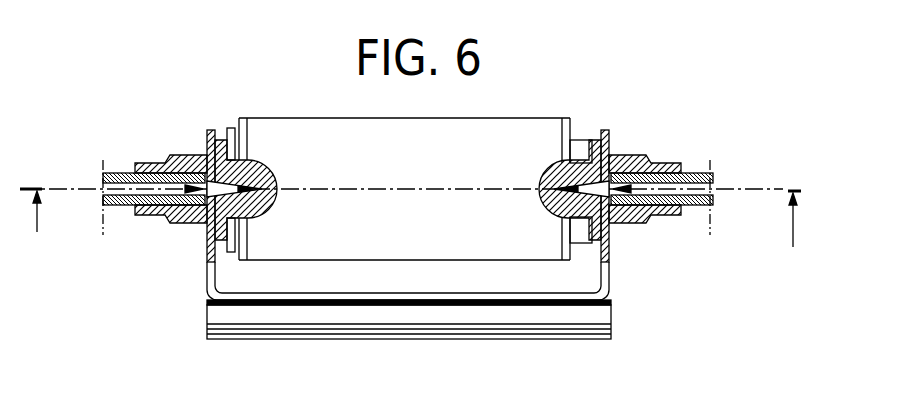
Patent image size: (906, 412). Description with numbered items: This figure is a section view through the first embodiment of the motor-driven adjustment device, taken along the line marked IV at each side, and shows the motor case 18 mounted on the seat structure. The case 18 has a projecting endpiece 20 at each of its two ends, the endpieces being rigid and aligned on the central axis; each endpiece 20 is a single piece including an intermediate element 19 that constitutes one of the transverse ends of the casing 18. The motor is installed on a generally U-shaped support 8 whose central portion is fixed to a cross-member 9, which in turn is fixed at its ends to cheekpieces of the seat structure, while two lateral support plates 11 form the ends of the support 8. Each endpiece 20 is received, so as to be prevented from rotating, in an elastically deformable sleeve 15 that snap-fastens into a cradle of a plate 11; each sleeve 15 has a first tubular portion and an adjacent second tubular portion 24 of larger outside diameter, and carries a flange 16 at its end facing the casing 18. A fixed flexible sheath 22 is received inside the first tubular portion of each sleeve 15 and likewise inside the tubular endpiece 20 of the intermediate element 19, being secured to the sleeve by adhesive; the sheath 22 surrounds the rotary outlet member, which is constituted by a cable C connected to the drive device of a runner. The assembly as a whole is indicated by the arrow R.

The support 8 is at (207, 280).
The cross-member 9 is at (245, 320).
The lateral support plate 11 is at (208, 130).
The elastically deformable sleeve 15 is at (640, 160).
The flange 16 is at (605, 132).
The case 18 is at (267, 122).
The intermediate element 19 is at (230, 128).
The projecting endpiece 20 is at (182, 155).
The flexible sheath 22 is at (120, 205).
The second tubular portion 24 is at (632, 163).
The cable C is at (103, 177).
The roller assembly R is at (592, 77).
The section line IV- IV is at (410, 218).